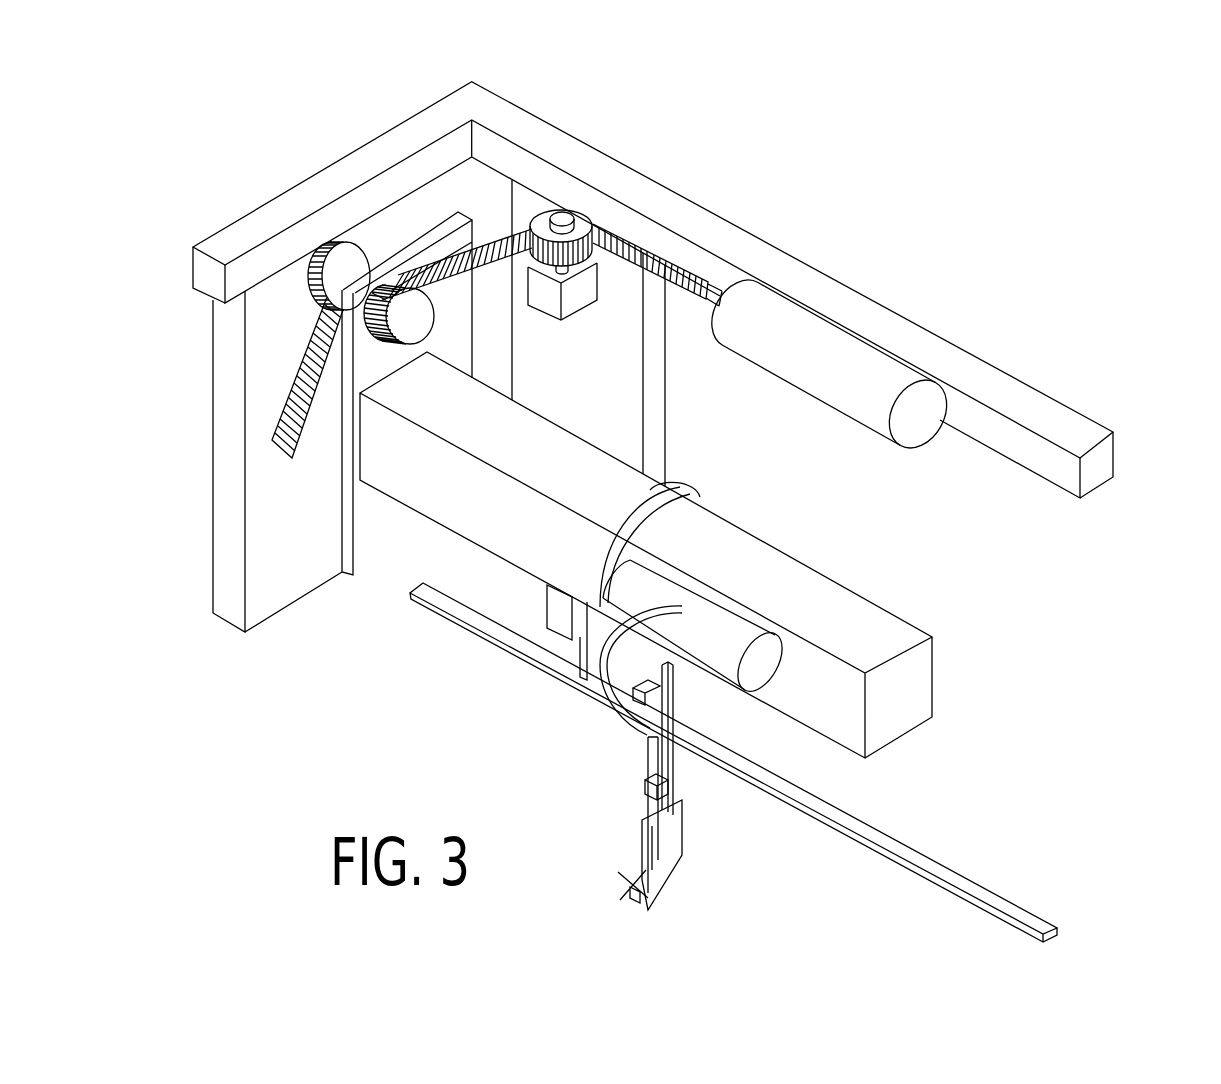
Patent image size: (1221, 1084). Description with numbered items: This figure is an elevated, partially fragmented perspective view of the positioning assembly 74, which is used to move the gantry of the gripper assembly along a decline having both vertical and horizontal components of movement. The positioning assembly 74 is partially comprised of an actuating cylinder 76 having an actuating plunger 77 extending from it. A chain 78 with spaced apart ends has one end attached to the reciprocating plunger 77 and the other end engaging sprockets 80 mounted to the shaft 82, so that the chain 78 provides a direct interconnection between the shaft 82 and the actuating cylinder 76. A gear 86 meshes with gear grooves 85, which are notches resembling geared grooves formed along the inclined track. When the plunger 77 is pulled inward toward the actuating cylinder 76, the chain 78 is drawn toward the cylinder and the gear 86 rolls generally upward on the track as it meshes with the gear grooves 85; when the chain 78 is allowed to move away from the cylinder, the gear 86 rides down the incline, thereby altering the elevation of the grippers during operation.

The positioning assembly 74 is at (1039, 592).
The actuating cylinder 76 is at (827, 335).
The actuating plunger 77 is at (712, 287).
The chain 78 is at (640, 257).
The sprockets 80 is at (582, 217).
The shaft 82 is at (372, 293).
The gear grooves 85 is at (290, 437).
The gear 86 is at (337, 247).